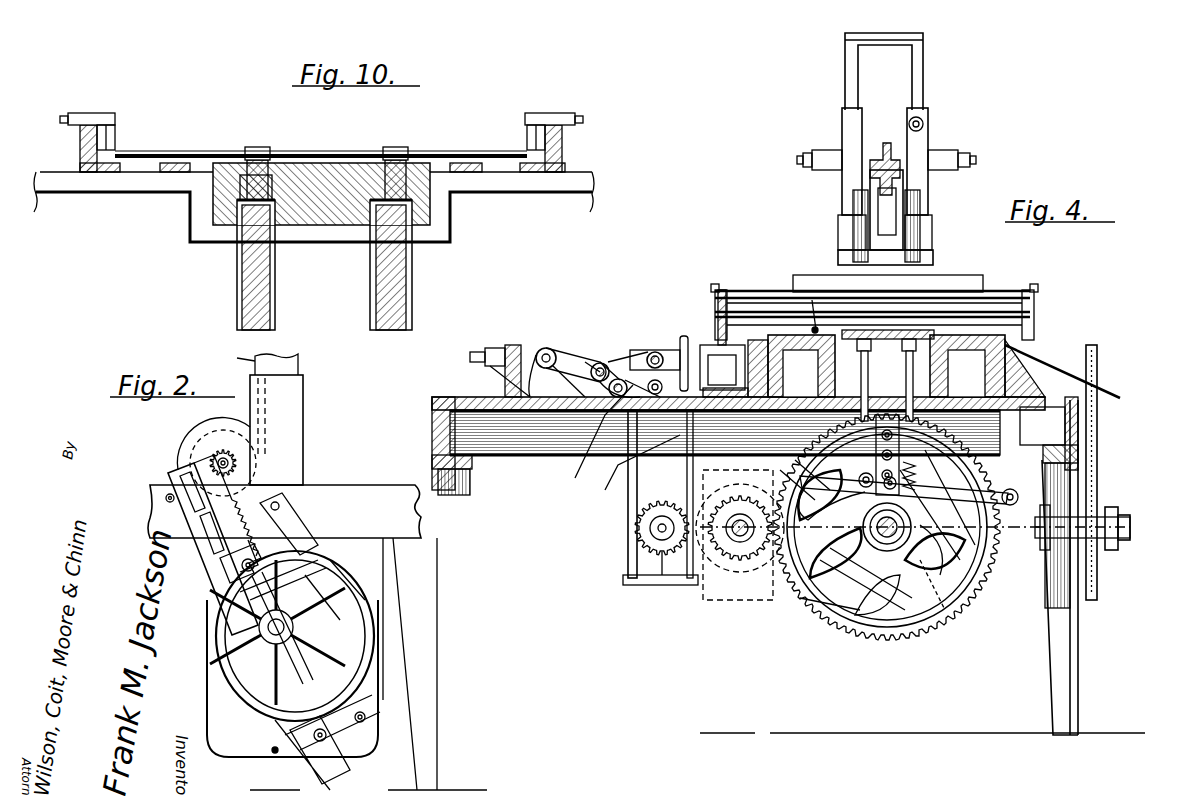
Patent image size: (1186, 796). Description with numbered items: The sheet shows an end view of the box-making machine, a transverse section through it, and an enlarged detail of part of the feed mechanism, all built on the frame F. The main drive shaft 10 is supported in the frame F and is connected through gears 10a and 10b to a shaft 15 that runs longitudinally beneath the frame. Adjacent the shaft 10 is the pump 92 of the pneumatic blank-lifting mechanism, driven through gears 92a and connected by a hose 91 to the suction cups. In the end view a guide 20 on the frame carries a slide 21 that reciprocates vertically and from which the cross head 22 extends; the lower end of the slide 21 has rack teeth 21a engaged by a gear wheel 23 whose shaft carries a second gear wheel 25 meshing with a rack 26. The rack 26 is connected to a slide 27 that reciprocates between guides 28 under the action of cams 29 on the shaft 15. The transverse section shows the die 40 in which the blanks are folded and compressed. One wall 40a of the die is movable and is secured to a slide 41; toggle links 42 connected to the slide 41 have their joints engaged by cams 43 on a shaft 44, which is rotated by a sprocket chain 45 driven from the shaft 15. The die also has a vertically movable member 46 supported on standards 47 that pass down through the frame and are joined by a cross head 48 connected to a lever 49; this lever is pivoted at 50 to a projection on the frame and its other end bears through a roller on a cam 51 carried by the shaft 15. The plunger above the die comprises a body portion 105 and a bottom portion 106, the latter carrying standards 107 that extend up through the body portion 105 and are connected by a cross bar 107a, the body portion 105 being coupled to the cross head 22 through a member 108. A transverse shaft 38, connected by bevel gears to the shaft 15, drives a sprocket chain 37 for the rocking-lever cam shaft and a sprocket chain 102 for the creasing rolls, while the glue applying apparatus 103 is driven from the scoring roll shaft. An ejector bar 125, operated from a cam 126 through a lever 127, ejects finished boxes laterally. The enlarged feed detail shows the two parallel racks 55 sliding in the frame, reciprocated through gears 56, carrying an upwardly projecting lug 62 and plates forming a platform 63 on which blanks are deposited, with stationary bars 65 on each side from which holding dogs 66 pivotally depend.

In FIG. 4, the main drive shaft 10 is at (735, 562).
In FIG. 4, the gear 10a is at (775, 560).
In FIG. 4, the gear 10b is at (802, 600).
In FIG. 2, the shaft 15 is at (275, 630).
In FIG. 4, the shaft 15 is at (860, 575).
In FIG. 2, the guide 20 is at (292, 407).
In FIG. 2, the slide 21 is at (278, 363).
In FIG. 2, the rack teeth 21a is at (237, 358).
In FIG. 4, the horizontal arm or cross head 22 is at (896, 128).
In FIG. 2, the gear wheel 23 is at (200, 440).
In FIG. 2, the second gear wheel 25 is at (235, 458).
In FIG. 2, the rack 26 is at (270, 512).
In FIG. 2, the slide 27 is at (278, 548).
In FIG. 2, the guides 28 is at (198, 560).
In FIG. 2, the cams 29 is at (370, 592).
In FIG. 4, the sprocket chain 37 is at (1112, 510).
In FIG. 4, the shaft 38 is at (1130, 526).
In FIG. 4, the die 40 is at (920, 372).
In FIG. 4, the movable side wall 40a is at (812, 328).
In FIG. 4, the slide 41 is at (767, 343).
In FIG. 4, the toggle links 42 is at (563, 358).
In FIG. 4, the cams 43 is at (620, 378).
In FIG. 4, the shaft 44 is at (592, 437).
In FIG. 4, the sprocket chain 45 is at (630, 468).
In FIG. 4, the vertically movable member 46 is at (886, 330).
In FIG. 4, the standards 47 is at (945, 371).
In FIG. 4, the cross head 48 is at (935, 428).
In FIG. 4, the lever 49 is at (990, 555).
In FIG. 4, the pivot 50 is at (1000, 478).
In FIG. 4, the cam 51 is at (887, 540).
In FIG. 10, the racks 55 is at (280, 178).
In FIG. 10, the gears 56 is at (390, 258).
In FIG. 10, the lug 62 is at (257, 147).
In FIG. 10, the platform 63 is at (172, 156).
In FIG. 10, the stationary bars 65 is at (68, 141).
In FIG. 10, the holding dogs 66 is at (114, 141).
In FIG. 4, the hose 91 is at (687, 470).
In FIG. 4, the pump 92 is at (628, 510).
In FIG. 4, the gears 92a is at (665, 560).
In FIG. 4, the sprocket chain 102 is at (1098, 432).
In FIG. 4, the glue applying apparatus 103 is at (968, 284).
In FIG. 4, the body portion 105 is at (930, 235).
In FIG. 4, the bottom portion 106 is at (930, 263).
In FIG. 4, the standards 107 is at (915, 92).
In FIG. 4, the cross bar 107a is at (862, 36).
In FIG. 4, the member 108 is at (875, 182).
In FIG. 4, the ejector bar 125 is at (816, 318).
In FIG. 4, the cam 126 is at (935, 645).
In FIG. 4, the lever 127 is at (1012, 422).
In FIG. 4, the frame F is at (490, 397).